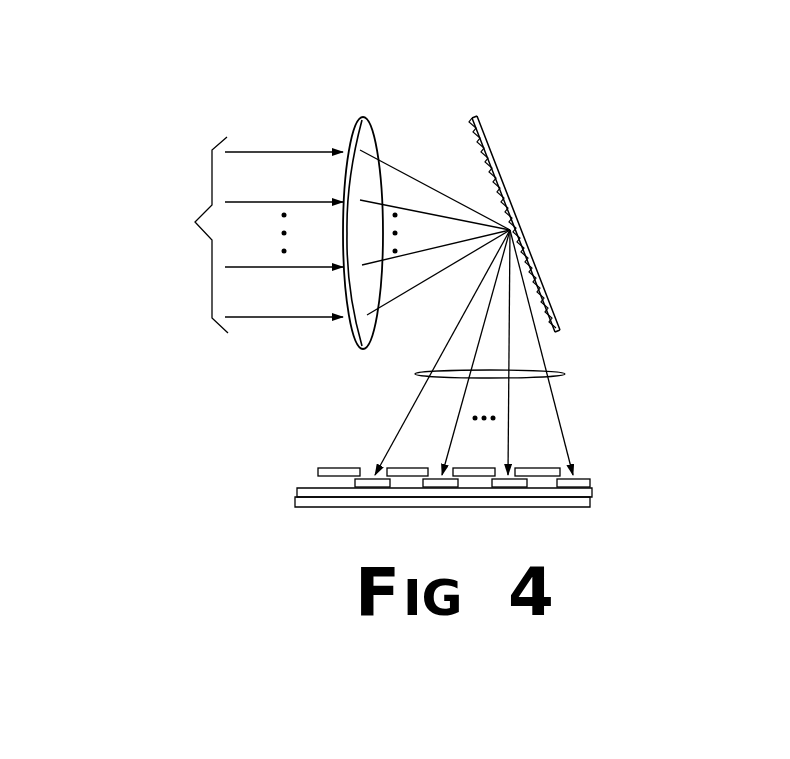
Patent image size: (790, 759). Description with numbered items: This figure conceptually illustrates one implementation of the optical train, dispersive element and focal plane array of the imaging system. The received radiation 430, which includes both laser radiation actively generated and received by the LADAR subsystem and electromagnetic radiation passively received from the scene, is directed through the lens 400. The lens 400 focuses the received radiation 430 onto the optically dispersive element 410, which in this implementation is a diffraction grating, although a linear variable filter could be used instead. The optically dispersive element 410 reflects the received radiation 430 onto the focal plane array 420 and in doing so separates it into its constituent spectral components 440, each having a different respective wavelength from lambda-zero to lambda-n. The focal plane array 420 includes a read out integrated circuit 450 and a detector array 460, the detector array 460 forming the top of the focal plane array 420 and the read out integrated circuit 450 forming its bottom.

The lens 400 is at (362, 118).
The optically dispersive element 410 is at (474, 118).
The focal plane array 420 is at (447, 469).
The received radiation 430 is at (244, 235).
The constituent spectral components 440 is at (563, 372).
The read out integrated circuit 450 is at (597, 488).
The detector array 460 is at (597, 465).